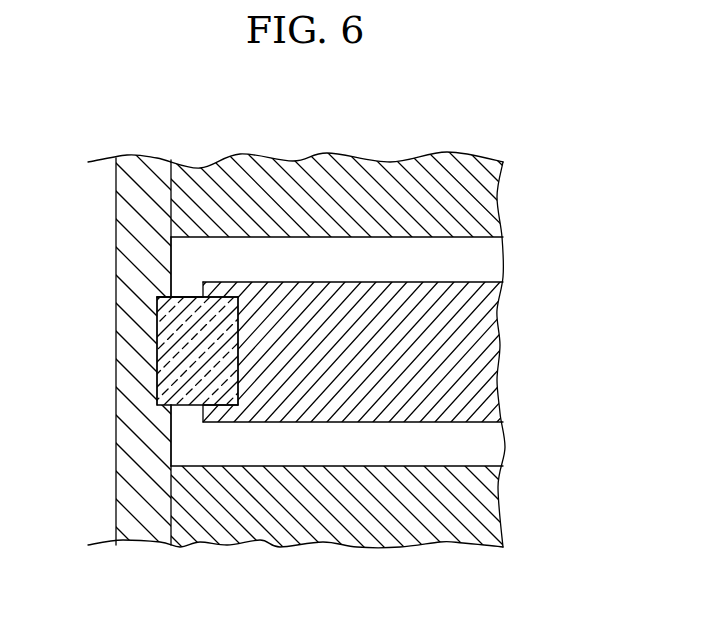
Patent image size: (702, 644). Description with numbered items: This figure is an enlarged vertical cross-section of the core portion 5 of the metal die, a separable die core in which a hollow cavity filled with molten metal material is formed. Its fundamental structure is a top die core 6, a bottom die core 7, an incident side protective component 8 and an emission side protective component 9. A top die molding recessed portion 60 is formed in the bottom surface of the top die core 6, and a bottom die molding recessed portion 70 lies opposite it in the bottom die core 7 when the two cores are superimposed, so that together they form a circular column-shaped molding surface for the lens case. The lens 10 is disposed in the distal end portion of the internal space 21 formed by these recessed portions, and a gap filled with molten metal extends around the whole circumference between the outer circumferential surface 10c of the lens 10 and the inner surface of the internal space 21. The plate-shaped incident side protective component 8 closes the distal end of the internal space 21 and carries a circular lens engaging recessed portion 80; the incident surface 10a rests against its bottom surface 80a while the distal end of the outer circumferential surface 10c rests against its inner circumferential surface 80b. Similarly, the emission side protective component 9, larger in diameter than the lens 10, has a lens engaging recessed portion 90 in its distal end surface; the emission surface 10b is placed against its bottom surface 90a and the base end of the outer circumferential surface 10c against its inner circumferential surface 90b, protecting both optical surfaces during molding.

The core portion 5 is at (466, 132).
The top die core 6 is at (303, 173).
The bottom die core 7 is at (312, 530).
The incident side protective component 8 is at (116, 438).
The emission side protective component 9 is at (468, 295).
The lens 10 is at (187, 410).
The incident surface 10a is at (157, 338).
The emission surface 10b is at (238, 367).
The outer circumferential surface 10c is at (193, 297).
The internal space 21 is at (455, 257).
The top die molding recessed portion 60 is at (350, 237).
The bottom die molding recessed portion 70 is at (370, 466).
The lens engaging recessed portion 80 is at (177, 290).
The bottom surface 80a is at (158, 361).
The inner circumferential surface 80b is at (157, 396).
The lens engaging recessed portion 90 is at (194, 412).
The bottom surface 90a is at (233, 305).
The inner circumferential surface 90b is at (213, 405).